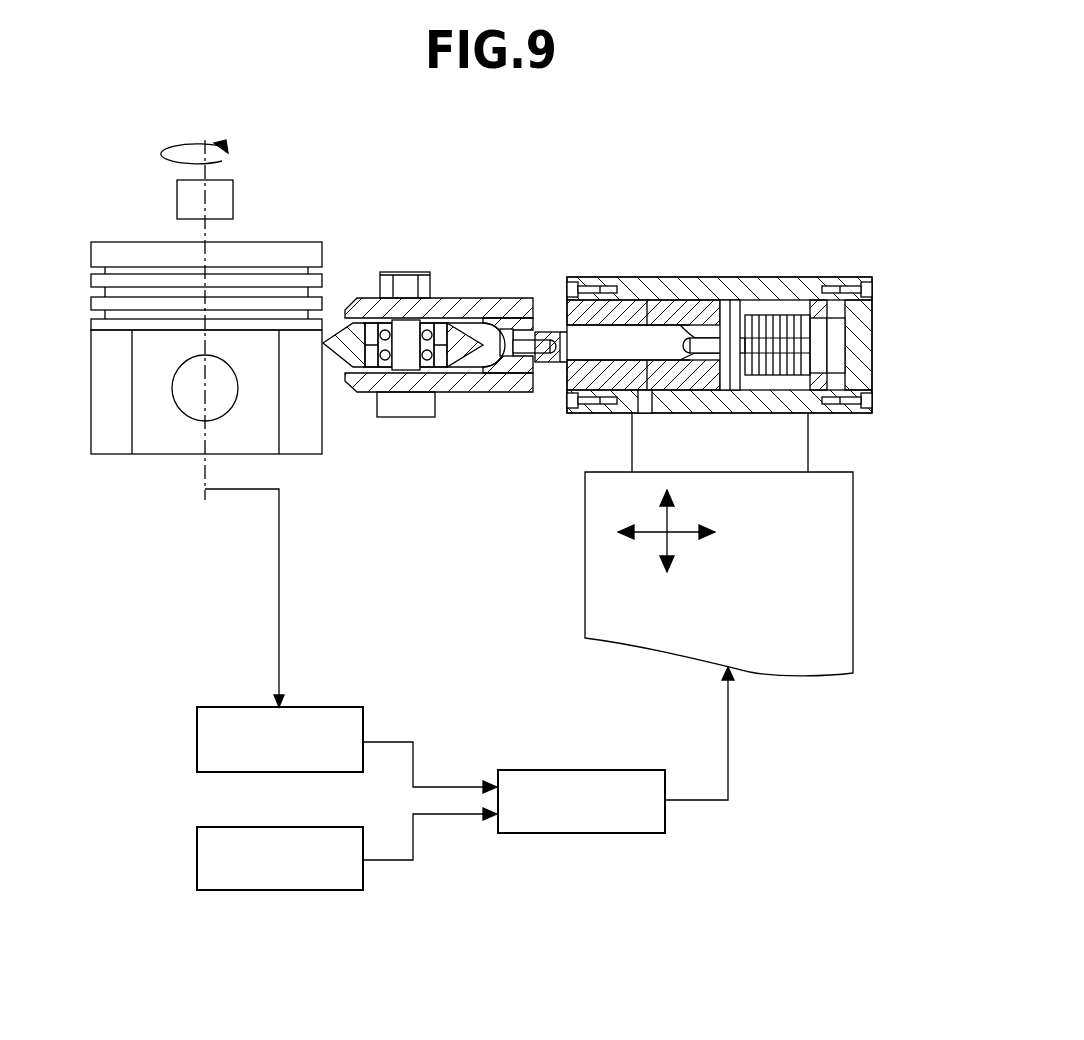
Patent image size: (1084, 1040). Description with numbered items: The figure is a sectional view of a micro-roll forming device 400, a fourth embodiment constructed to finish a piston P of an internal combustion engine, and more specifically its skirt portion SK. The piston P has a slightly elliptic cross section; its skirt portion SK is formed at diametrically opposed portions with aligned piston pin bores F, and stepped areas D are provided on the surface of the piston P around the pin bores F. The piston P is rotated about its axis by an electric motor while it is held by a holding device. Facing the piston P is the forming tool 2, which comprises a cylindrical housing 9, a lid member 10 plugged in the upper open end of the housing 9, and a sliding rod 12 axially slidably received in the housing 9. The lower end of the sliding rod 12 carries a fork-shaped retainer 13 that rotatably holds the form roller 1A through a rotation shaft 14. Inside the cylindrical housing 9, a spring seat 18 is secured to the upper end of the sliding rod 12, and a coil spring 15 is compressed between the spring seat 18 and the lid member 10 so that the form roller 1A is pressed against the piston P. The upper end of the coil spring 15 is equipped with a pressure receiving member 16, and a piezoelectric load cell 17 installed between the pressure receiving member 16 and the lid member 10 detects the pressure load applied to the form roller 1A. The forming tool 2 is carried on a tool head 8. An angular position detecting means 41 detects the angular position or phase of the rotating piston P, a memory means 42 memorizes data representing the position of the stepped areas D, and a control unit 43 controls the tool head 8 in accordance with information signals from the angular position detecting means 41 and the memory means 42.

The piston P is at (186, 423).
The skirt portion SK is at (110, 447).
The piston pin bores F is at (187, 422).
The stepped areas D is at (258, 438).
The micro-roll forming device 400 is at (650, 130).
The form roller 1A is at (457, 337).
The fork-shaped retainer 13 is at (513, 317).
The rotation shaft 14 is at (427, 410).
The forming tool 2 is at (754, 311).
The cylindrical housing 9 is at (771, 292).
The sliding rod 12 is at (605, 342).
The spring seat 18 is at (733, 315).
The coil spring 15 is at (782, 305).
The pressure receiving member 16 is at (817, 360).
The lid member 10 is at (866, 313).
The piezoelectric load cell 17 is at (838, 358).
The tool head 8 is at (840, 583).
The angular position detecting means 41 is at (197, 737).
The memory means 42 is at (197, 855).
The control unit 43 is at (608, 770).